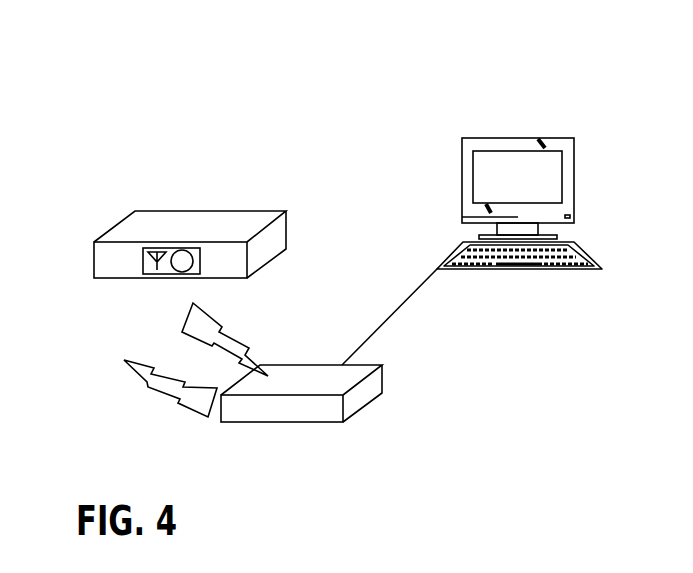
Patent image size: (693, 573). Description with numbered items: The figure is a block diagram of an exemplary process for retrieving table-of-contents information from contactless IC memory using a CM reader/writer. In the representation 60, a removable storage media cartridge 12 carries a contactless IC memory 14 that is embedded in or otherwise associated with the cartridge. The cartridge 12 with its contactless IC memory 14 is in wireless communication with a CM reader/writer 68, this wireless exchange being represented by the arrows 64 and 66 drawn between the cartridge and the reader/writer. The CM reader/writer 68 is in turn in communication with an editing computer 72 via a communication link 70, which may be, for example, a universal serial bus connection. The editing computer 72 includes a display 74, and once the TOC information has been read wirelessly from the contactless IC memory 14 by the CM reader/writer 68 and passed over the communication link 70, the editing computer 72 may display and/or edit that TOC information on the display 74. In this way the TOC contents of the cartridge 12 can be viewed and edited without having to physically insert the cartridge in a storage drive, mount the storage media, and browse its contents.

The representation 60 is at (233, 87).
The removable storage media cartridge 12 is at (280, 254).
The contactless IC memory 14 is at (143, 258).
The arrow 66 is at (183, 321).
The arrow 64 is at (176, 404).
The CM reader/writer 68 is at (362, 409).
The communication link 70 is at (390, 313).
The editing computer 72 is at (602, 267).
The display 74 is at (575, 180).